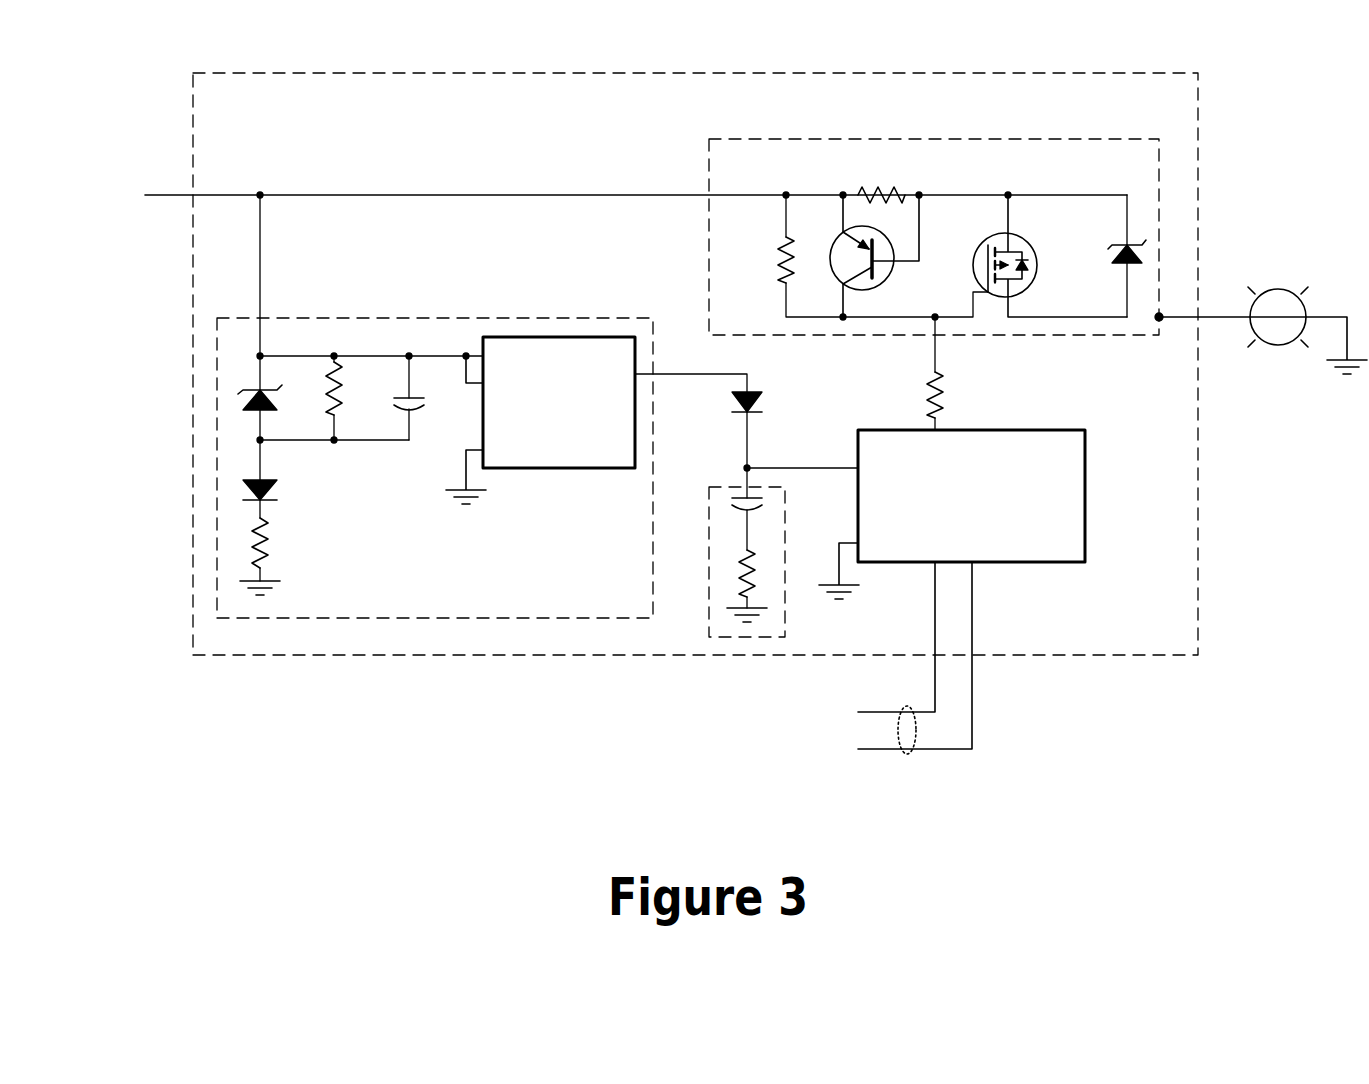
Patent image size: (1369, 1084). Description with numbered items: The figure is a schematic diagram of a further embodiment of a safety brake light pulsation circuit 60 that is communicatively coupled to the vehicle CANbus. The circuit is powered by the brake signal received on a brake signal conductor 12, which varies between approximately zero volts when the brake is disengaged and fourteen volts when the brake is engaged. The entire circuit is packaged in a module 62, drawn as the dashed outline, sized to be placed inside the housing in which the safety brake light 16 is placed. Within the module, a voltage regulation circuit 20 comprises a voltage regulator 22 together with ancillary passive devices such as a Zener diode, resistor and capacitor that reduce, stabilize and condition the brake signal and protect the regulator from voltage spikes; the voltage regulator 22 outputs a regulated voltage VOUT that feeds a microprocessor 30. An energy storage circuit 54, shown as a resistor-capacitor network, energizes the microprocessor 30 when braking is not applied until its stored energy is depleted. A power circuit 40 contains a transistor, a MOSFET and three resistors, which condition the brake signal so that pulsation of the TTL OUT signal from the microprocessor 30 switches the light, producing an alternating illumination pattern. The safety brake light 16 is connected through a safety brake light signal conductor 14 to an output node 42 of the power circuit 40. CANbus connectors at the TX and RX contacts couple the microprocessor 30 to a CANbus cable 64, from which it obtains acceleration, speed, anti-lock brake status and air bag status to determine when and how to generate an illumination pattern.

The safety brake light pulsation circuit 60 is at (120, 135).
The brake signal conductor 12 is at (165, 194).
The module 62 is at (193, 277).
The voltage regulation circuit 20 is at (350, 318).
The voltage regulator 22 is at (533, 337).
The power circuit 40 is at (905, 139).
The microprocessor 30 is at (1085, 496).
The energy storage circuit 54 is at (786, 562).
The safety brake light signal conductor 14 is at (1215, 317).
The safety brake light 16 is at (1275, 290).
The output node 42 is at (1160, 320).
The CANbus cable 64 is at (907, 753).